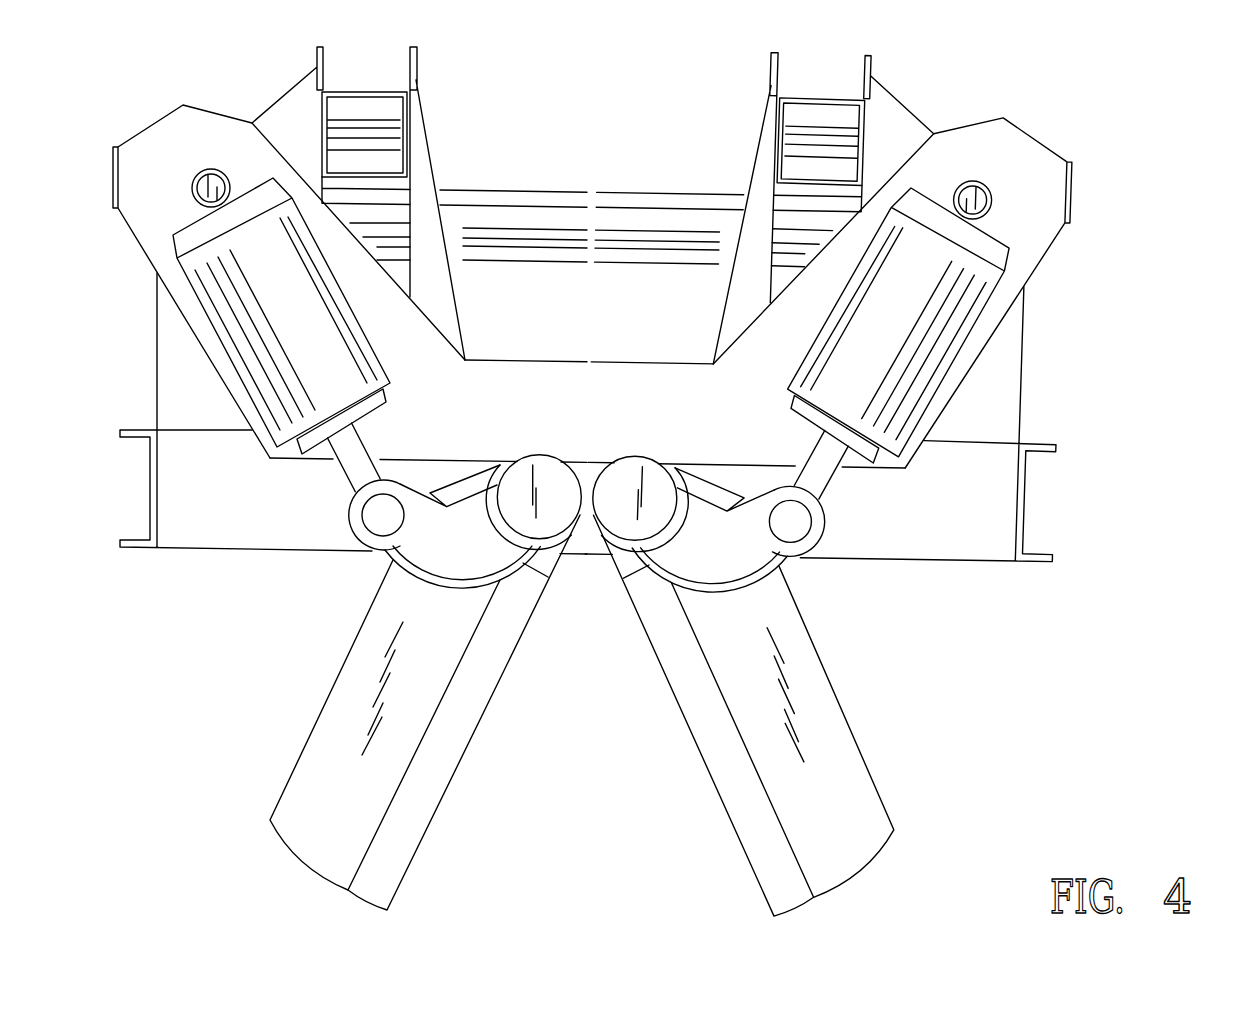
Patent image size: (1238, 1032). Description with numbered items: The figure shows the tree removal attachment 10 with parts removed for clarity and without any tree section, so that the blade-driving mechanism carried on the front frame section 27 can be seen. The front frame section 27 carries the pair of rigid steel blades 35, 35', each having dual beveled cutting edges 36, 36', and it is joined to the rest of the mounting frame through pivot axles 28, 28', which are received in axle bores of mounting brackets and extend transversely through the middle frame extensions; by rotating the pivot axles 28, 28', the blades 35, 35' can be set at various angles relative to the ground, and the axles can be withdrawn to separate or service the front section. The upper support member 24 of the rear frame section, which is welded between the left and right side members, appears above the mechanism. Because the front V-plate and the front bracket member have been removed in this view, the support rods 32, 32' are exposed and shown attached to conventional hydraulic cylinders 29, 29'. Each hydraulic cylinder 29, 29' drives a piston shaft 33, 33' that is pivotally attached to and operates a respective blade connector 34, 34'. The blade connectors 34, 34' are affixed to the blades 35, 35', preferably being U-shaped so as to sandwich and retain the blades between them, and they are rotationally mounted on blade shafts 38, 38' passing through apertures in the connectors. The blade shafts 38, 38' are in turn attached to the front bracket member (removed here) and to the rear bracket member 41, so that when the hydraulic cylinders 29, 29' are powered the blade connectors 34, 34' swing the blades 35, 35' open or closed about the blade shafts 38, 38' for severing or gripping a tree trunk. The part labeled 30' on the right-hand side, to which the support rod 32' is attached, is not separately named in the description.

The tree removal attachment 10 is at (1090, 99).
The upper support member 24 is at (617, 218).
The front frame section 27 is at (988, 116).
The pivot axle 28 is at (401, 134).
The pivot axle 28' is at (794, 136).
The hydraulic cylinder 29 is at (281, 316).
The hydraulic cylinder 29' is at (899, 325).
The mounting plate 30' is at (918, 293).
The support rod 32 is at (203, 167).
The support rod 32' is at (972, 183).
The piston shaft 33 is at (385, 455).
The piston shaft 33' is at (781, 458).
The blade connector 34 is at (452, 535).
The blade connector 34' is at (729, 538).
The blade 35 is at (364, 725).
The blade 35' is at (811, 731).
The dual beveled cutting edge 36 is at (464, 712).
The dual beveled cutting edge 36' is at (704, 715).
The blade shaft 38 is at (539, 471).
The blade shaft 38' is at (635, 476).
The rear bracket member 41 is at (997, 533).